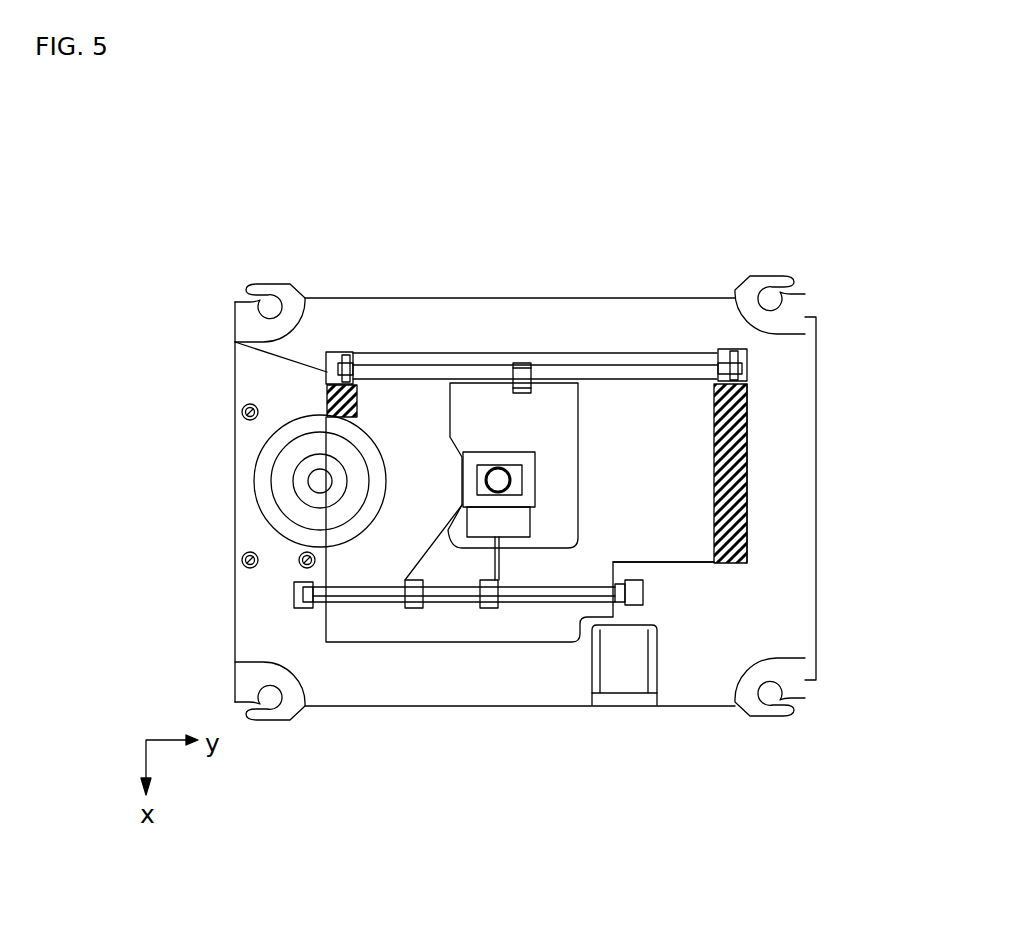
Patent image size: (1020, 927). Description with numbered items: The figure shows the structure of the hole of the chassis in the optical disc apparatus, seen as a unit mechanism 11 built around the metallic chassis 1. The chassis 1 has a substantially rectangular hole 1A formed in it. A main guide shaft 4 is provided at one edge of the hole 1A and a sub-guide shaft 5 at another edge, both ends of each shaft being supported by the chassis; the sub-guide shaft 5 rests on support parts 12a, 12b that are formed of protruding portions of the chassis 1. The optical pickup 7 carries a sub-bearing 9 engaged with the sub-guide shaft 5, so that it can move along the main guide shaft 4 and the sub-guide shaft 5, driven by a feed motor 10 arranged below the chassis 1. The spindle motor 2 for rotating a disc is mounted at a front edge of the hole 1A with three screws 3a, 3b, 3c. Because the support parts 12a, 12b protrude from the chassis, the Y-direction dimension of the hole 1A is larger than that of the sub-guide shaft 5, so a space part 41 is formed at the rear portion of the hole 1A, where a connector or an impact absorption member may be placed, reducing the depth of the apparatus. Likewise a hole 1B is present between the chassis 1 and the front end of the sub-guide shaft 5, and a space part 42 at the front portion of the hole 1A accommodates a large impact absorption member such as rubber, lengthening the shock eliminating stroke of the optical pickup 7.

The chassis 1 is at (535, 490).
The hole 1A is at (682, 562).
The hole 1B is at (234, 340).
The spindle motor 2 is at (312, 482).
The screw 3a is at (245, 413).
The screw 3b is at (245, 565).
The screw 3c is at (300, 566).
The main guide shaft 4 is at (513, 593).
The sub-guide shaft 5 is at (647, 373).
The optical pickup 7 is at (497, 412).
The sub-bearing 9 is at (520, 377).
The feed motor 10 is at (622, 662).
The unit mechanism 11 is at (535, 464).
The support part 12a is at (343, 372).
The support part 12b is at (723, 365).
The space part 41 is at (733, 432).
The space part 42 is at (328, 397).